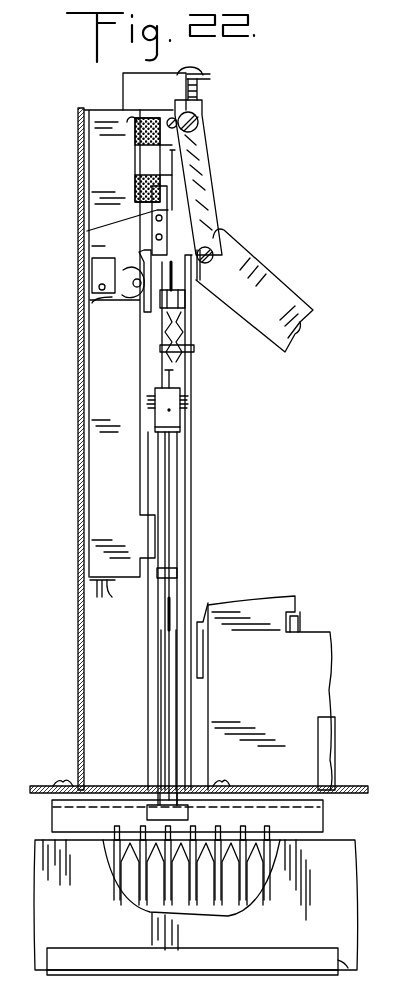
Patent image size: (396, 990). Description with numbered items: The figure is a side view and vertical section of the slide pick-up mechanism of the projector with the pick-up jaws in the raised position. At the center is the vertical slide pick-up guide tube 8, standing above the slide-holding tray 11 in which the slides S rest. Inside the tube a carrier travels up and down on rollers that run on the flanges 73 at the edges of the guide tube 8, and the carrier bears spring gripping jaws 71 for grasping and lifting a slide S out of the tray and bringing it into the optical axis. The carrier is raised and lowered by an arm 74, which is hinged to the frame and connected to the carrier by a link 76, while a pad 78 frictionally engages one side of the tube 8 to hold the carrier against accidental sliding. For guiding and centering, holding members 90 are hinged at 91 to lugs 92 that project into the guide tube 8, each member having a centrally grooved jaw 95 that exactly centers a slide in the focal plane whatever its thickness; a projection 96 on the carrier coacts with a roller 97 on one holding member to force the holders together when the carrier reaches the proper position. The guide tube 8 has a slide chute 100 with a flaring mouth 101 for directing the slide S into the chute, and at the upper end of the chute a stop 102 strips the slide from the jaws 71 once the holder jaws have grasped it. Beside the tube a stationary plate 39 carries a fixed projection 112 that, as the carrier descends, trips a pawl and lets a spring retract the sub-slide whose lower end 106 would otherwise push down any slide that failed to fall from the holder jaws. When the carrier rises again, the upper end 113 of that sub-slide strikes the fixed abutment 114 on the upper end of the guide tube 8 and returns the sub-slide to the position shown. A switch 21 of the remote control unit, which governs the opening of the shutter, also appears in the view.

The vertical slide pick-up guide tube 8 is at (72, 651).
The slide-holding tray 11 is at (86, 925).
The switch 21 is at (178, 371).
The stationary plate 39 is at (325, 657).
The spring gripping jaws 71 is at (197, 345).
The flanges 73 is at (191, 468).
The arm 74 is at (288, 293).
The link 76 is at (203, 178).
The pad 78 is at (138, 168).
The holding members 90 is at (105, 458).
The hinge 91 is at (98, 282).
The lugs 92 is at (95, 300).
The centrally grooved jaw 95 is at (172, 455).
The projection 96 is at (143, 300).
The roller 97 is at (150, 262).
The slide chute 100 is at (167, 705).
The flaring mouth 101 is at (155, 810).
The stop 102 is at (173, 420).
The lower end of sub-slide 106 is at (197, 355).
The fixed projection 112 is at (204, 662).
The upper end of sub-slide 113 is at (192, 88).
The fixed abutment 114 is at (193, 82).
The slides S is at (243, 827).